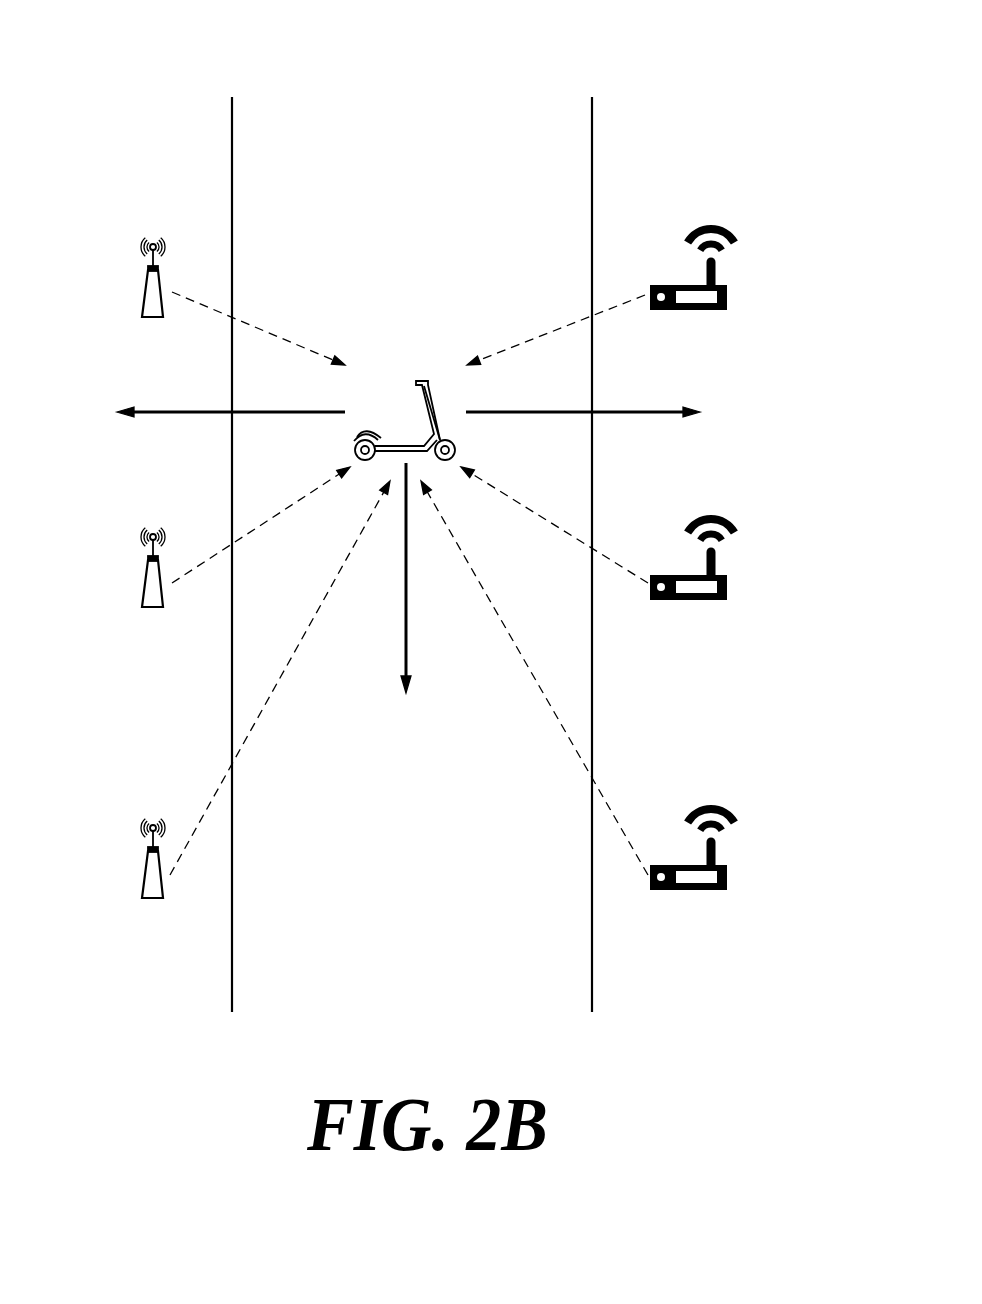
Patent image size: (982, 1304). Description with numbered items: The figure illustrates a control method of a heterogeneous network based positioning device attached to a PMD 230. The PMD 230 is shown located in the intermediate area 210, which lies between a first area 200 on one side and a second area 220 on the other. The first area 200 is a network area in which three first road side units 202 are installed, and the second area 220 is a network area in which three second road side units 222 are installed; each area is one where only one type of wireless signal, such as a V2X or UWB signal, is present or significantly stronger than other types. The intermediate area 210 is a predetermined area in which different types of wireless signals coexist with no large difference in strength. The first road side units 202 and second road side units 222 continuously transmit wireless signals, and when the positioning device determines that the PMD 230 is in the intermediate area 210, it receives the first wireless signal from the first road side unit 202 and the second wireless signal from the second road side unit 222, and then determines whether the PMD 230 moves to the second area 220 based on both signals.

The first area 200 is at (138, 100).
The first road side unit 202 is at (146, 294).
The intermediate area 210 is at (429, 100).
The second area 220 is at (700, 100).
The second road side unit 222 is at (729, 296).
The PMD 230 is at (426, 378).